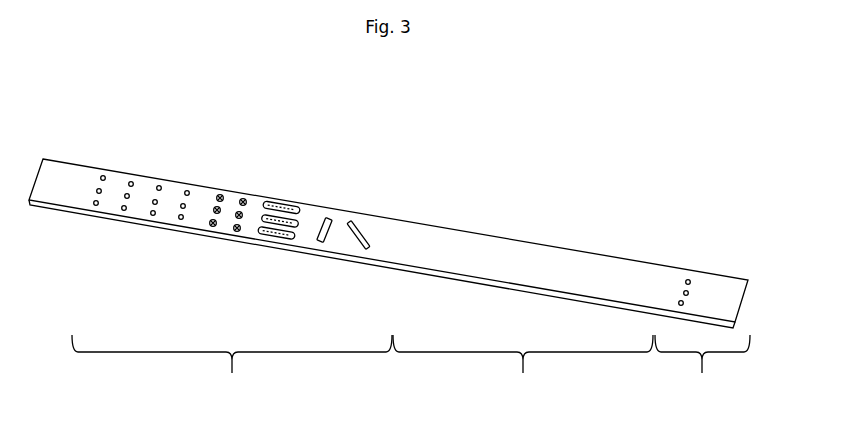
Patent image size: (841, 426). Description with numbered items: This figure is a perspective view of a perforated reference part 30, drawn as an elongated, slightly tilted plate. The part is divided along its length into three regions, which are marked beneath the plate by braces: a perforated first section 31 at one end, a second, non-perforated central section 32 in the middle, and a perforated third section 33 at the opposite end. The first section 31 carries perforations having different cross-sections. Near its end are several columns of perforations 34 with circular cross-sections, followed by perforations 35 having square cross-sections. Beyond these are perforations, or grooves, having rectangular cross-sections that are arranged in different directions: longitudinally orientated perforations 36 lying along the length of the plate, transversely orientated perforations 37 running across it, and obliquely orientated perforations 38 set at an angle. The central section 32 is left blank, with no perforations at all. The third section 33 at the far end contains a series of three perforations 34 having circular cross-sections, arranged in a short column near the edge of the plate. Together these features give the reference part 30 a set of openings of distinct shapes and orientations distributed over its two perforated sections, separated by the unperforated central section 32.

The perforated reference part 30 is at (524, 198).
The perforated first section 31 is at (232, 370).
The non-perforated central section 32 is at (523, 370).
The perforated third section 33 is at (702, 370).
The perforations with circular cross-sections 34 is at (101, 176).
The perforations having square cross-sections 35 is at (218, 196).
The longitudinally orientated perforations 36 is at (268, 205).
The transversely orientated perforations 37 is at (326, 217).
The obliquely orientated perforations 38 is at (352, 217).